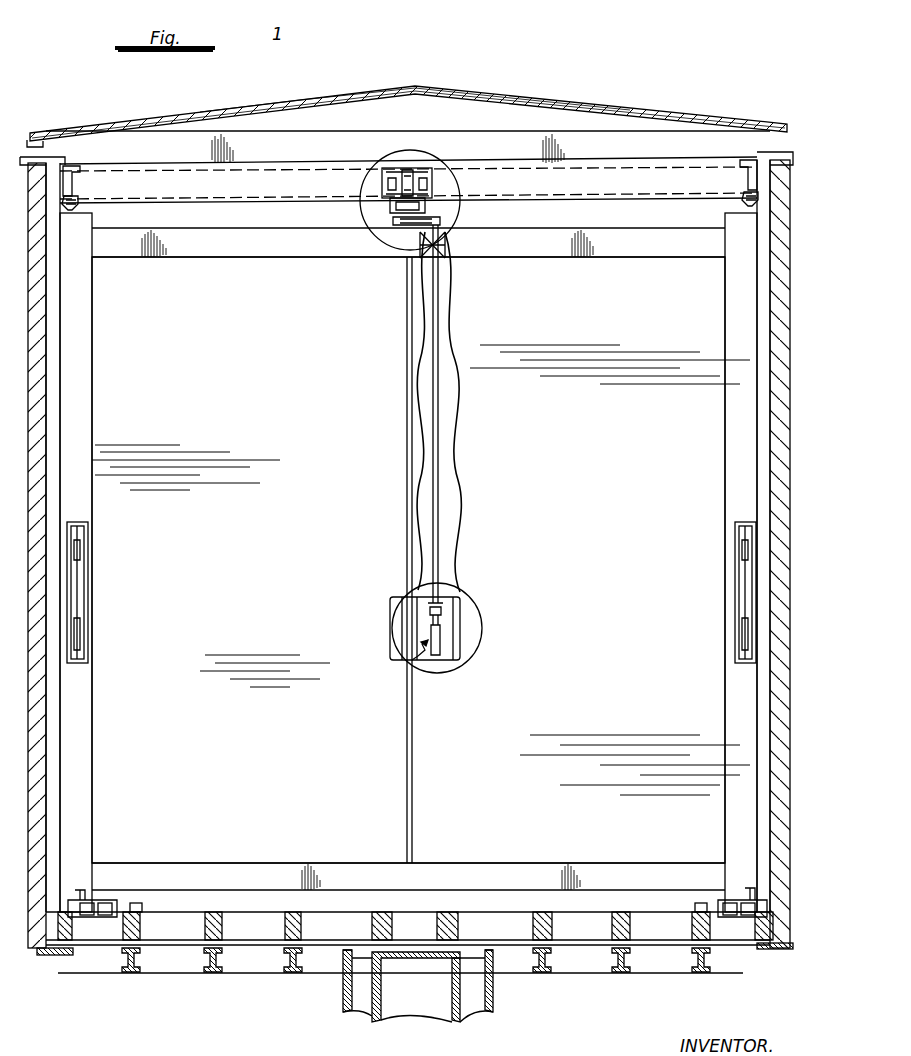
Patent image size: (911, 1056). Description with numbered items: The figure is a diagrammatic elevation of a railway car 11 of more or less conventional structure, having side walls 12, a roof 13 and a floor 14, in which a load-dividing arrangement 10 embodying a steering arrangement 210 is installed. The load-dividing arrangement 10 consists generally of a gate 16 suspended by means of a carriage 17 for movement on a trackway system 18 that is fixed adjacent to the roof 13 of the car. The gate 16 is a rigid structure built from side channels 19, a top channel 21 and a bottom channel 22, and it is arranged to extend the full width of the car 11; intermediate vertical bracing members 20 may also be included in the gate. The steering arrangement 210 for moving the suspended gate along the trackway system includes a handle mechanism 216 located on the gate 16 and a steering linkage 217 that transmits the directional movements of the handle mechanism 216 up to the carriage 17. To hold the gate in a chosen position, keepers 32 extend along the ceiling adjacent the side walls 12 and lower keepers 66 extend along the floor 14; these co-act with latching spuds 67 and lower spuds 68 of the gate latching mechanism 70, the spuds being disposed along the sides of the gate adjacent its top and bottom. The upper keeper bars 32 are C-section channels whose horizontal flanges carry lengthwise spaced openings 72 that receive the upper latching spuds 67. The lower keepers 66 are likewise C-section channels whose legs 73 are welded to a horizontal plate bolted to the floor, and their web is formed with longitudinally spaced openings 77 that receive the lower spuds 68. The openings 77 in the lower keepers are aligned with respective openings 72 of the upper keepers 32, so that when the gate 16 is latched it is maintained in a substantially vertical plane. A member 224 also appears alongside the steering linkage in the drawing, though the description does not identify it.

The load-dividing arrangement 10 is at (112, 187).
The railway car 11 is at (445, 93).
The side walls 12 is at (45, 684).
The roof 13 is at (369, 94).
The floor 14 is at (174, 930).
The gate 16 is at (219, 302).
The carriage 17 is at (418, 170).
The trackway system 18 is at (347, 198).
The side channels 19 is at (90, 410).
The intermediate vertical bracing members 20 is at (412, 625).
The top channel 21 is at (294, 250).
The bottom channel 22 is at (207, 880).
The upper keeper bars 32 is at (67, 172).
The lower keepers 66 is at (102, 904).
The upper latching spuds 67 is at (78, 206).
The lower spuds 68 is at (82, 898).
The gate latching mechanism 70 is at (82, 595).
The openings 72 is at (70, 214).
The legs 73 is at (118, 908).
The openings 77 is at (400, 986).
The steering arrangement 210 is at (445, 470).
The handle mechanism 216 is at (412, 661).
The steering linkage 217 is at (438, 322).
The operating rod 224 is at (442, 556).